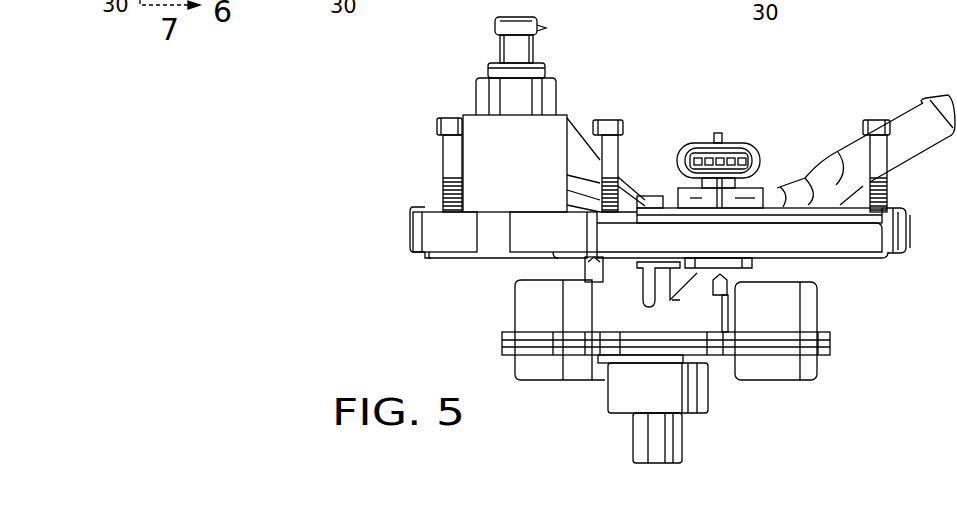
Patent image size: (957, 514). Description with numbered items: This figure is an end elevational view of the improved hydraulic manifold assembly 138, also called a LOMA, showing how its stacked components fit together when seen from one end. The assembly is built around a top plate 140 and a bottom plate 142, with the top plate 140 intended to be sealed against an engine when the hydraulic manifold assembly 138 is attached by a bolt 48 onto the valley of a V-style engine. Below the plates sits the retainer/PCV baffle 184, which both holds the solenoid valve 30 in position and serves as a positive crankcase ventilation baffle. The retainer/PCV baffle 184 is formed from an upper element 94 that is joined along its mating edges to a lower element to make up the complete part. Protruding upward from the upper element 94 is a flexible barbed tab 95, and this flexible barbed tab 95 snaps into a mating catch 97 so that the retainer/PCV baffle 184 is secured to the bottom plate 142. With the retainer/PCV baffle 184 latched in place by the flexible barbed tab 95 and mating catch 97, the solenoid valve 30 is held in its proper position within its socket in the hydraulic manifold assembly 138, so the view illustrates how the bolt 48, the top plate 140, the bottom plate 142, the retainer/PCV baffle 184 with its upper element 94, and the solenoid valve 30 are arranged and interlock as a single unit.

The solenoid valve 30 is at (614, 395).
The bolt 48 is at (437, 122).
The upper element 94 is at (830, 340).
The flexible barbed tab 95 is at (727, 316).
The mating catch 97 is at (727, 292).
The hydraulic manifold assembly 138 is at (786, 127).
The top plate 140 is at (652, 196).
The bottom plate 142 is at (612, 309).
The retainer/PCV baffle 184 is at (795, 302).